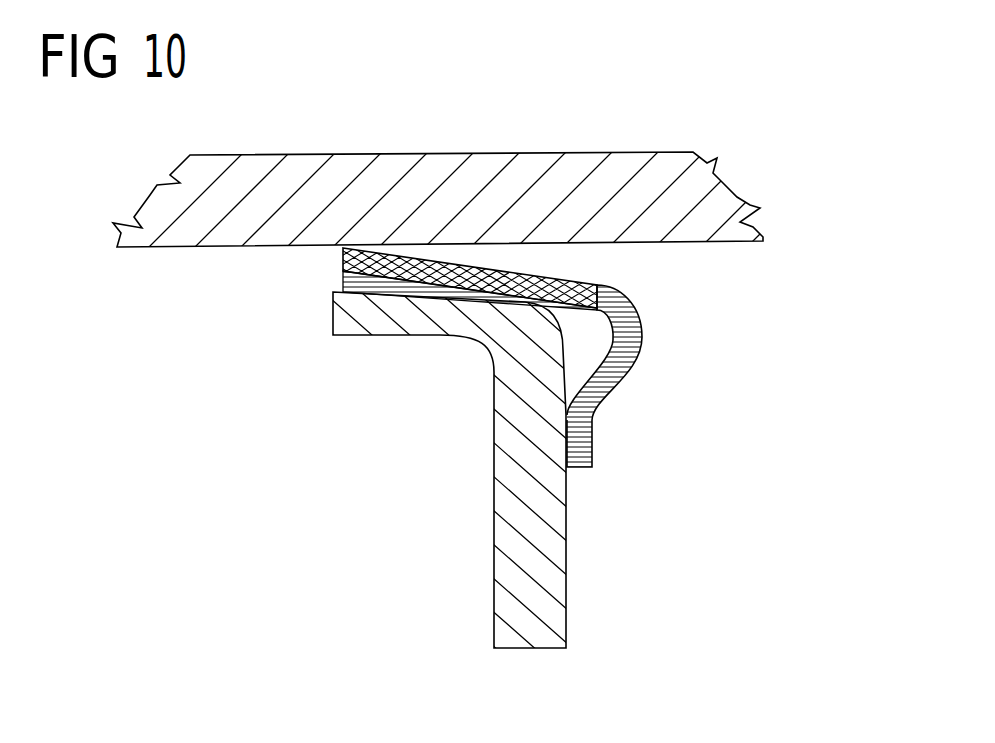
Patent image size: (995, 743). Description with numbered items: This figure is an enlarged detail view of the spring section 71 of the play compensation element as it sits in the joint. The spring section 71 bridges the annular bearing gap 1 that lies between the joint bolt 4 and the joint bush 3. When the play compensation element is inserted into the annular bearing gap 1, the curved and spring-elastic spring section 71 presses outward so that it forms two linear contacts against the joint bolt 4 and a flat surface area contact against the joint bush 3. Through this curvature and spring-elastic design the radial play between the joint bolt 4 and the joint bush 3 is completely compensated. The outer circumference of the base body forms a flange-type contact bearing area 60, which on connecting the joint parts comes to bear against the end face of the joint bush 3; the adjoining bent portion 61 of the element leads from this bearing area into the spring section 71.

The annular bearing gap 1 is at (470, 258).
The joint bush 3 is at (508, 572).
The joint bolt 4 is at (585, 170).
The flange-type contact bearing area 60 is at (593, 468).
The bent sealing strip portion 61 is at (643, 340).
The spring section 71 is at (423, 282).